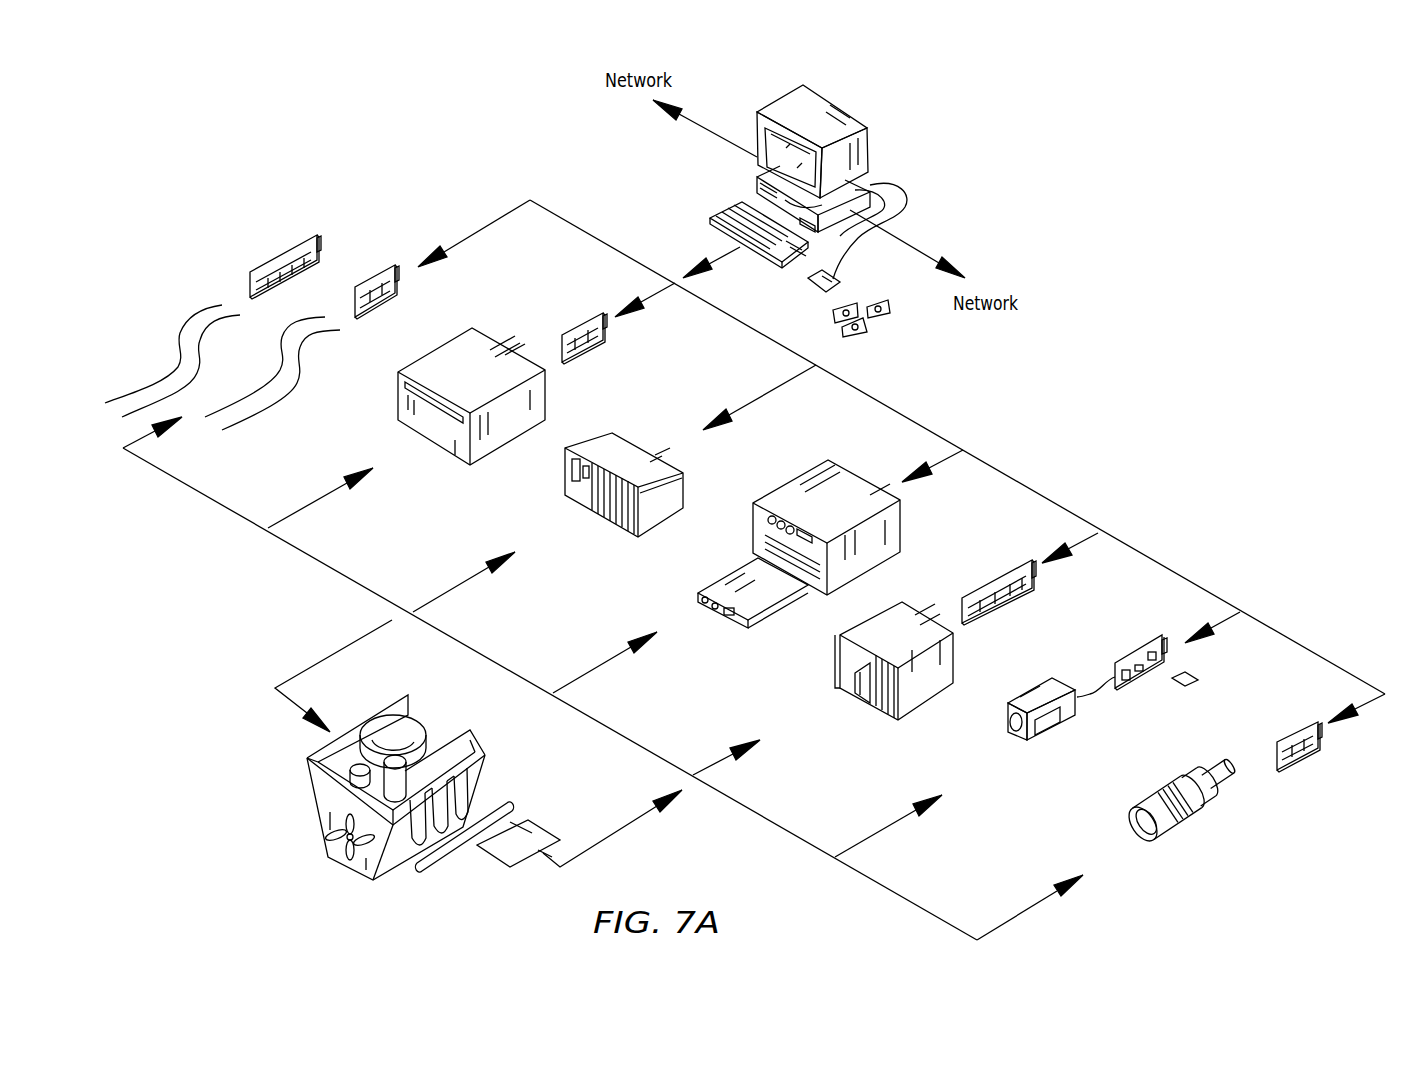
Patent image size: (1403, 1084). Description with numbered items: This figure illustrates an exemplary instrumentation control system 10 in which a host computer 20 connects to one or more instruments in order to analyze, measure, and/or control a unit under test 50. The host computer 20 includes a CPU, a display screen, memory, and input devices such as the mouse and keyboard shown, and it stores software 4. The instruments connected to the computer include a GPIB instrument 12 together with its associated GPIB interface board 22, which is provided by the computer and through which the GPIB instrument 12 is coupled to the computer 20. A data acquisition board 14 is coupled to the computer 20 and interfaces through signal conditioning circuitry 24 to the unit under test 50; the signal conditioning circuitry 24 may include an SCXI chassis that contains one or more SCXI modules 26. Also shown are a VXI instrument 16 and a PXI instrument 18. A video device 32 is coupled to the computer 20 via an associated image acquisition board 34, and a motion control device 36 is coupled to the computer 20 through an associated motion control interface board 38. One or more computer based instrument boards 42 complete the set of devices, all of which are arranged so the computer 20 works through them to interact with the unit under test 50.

The instrumentation control system 10 is at (1219, 156).
The host computer 20 is at (833, 181).
The software 4 is at (904, 345).
The computer based instrument boards 42 is at (284, 236).
The GPIB instrument 12 is at (464, 394).
The GPIB interface board 22 is at (560, 315).
The PXI instrument 18 is at (624, 452).
The VXI instrument 16 is at (799, 529).
The signal conditioning circuitry 24 is at (860, 697).
The SCXI modules 26 is at (854, 728).
The data acquisition board 14 is at (1104, 521).
The image acquisition board 34 is at (1132, 655).
The video device 32 is at (1034, 760).
The motion control device 36 is at (1236, 823).
The motion control interface board 38 is at (1328, 758).
The unit under test 50 is at (351, 787).